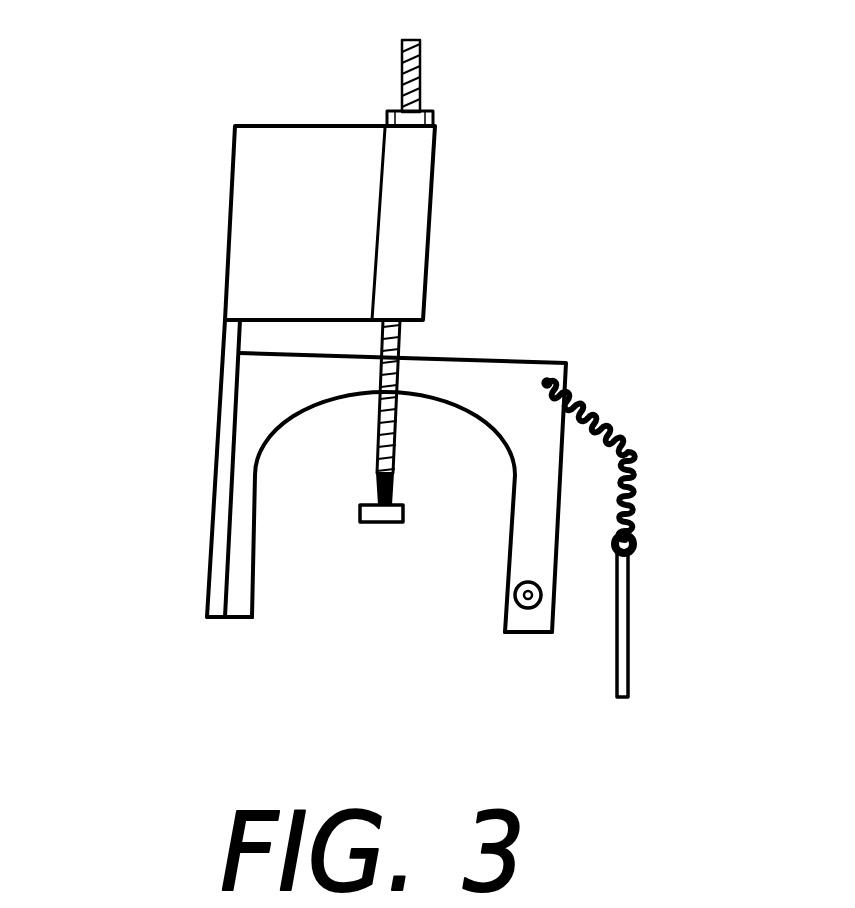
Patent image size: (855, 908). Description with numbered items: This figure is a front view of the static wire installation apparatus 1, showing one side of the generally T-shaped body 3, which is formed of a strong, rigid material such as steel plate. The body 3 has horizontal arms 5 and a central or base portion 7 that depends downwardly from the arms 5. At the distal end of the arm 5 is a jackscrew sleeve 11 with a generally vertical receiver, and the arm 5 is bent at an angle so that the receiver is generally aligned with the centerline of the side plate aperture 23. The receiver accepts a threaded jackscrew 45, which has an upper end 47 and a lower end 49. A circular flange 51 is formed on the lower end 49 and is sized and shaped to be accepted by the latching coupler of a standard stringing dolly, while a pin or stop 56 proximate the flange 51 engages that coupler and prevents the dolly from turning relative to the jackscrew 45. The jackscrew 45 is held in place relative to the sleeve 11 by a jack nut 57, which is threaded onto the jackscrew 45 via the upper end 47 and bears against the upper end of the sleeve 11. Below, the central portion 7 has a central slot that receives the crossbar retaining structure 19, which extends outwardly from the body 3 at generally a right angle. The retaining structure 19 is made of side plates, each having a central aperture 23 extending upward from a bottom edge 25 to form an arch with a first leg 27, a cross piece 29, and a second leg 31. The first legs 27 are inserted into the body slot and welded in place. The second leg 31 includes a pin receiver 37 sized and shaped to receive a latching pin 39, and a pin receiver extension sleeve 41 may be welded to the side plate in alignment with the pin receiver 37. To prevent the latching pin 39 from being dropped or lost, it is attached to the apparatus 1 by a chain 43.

The static wire installation apparatus 1 is at (628, 258).
The body 3 is at (222, 193).
The horizontal arms 5 is at (302, 124).
The central or base portion 7 is at (220, 376).
The jackscrew sleeve 11 is at (403, 418).
The crossbar retaining structure 19 is at (600, 373).
The central aperture 23 is at (255, 592).
The bottom edge 25 is at (520, 632).
The first leg 27 is at (245, 468).
The cross piece 29 is at (383, 446).
The second leg 31 is at (535, 493).
The pin receiver 37 is at (541, 594).
The latching pin 39 is at (636, 612).
The pin receiver extension sleeve 41 is at (521, 606).
The chain 43 is at (637, 457).
The threaded jackscrew 45 is at (478, 94).
The upper end 47 is at (475, 59).
The lower end 49 is at (360, 520).
The circular flange 51 is at (404, 507).
The pin or stop 56 is at (377, 485).
The jack nut 57 is at (481, 137).